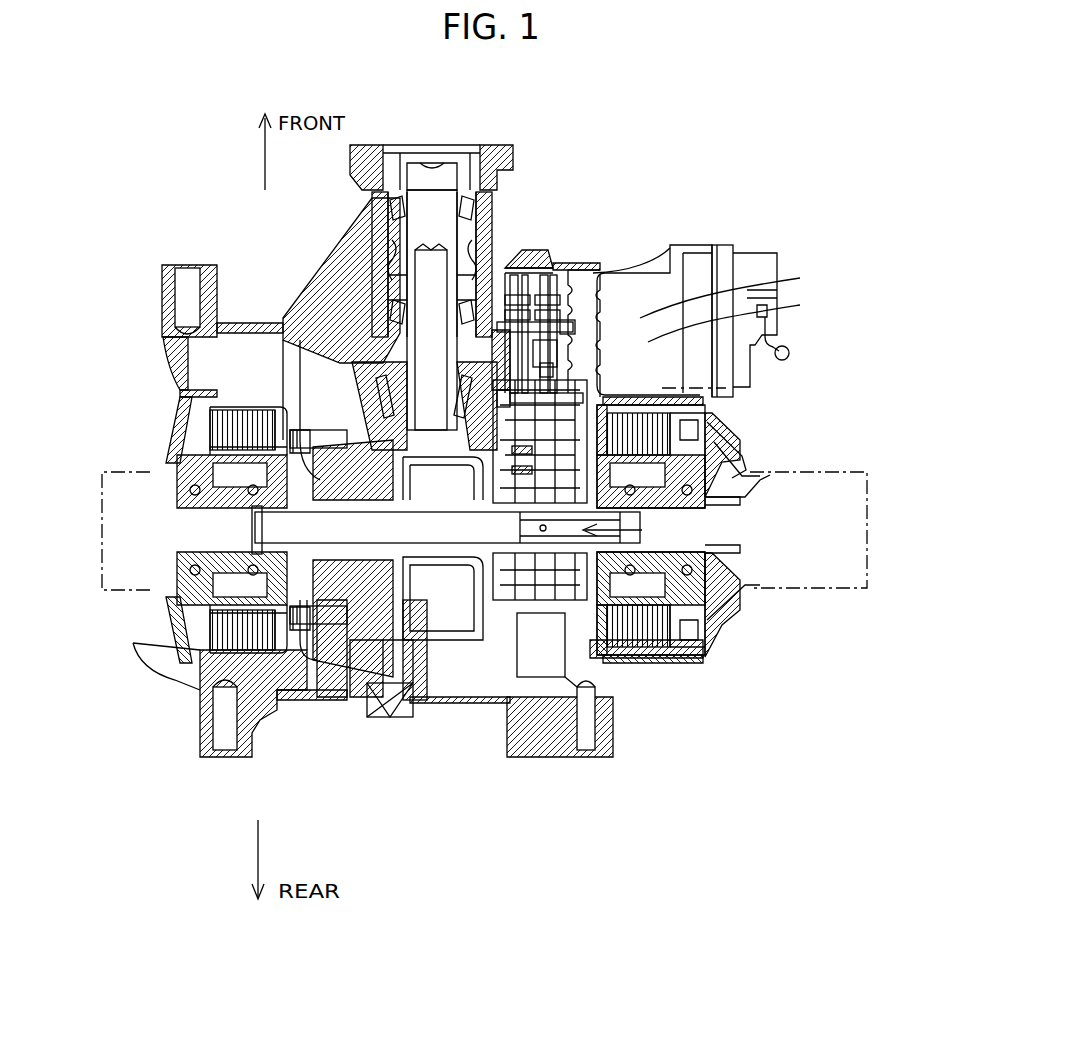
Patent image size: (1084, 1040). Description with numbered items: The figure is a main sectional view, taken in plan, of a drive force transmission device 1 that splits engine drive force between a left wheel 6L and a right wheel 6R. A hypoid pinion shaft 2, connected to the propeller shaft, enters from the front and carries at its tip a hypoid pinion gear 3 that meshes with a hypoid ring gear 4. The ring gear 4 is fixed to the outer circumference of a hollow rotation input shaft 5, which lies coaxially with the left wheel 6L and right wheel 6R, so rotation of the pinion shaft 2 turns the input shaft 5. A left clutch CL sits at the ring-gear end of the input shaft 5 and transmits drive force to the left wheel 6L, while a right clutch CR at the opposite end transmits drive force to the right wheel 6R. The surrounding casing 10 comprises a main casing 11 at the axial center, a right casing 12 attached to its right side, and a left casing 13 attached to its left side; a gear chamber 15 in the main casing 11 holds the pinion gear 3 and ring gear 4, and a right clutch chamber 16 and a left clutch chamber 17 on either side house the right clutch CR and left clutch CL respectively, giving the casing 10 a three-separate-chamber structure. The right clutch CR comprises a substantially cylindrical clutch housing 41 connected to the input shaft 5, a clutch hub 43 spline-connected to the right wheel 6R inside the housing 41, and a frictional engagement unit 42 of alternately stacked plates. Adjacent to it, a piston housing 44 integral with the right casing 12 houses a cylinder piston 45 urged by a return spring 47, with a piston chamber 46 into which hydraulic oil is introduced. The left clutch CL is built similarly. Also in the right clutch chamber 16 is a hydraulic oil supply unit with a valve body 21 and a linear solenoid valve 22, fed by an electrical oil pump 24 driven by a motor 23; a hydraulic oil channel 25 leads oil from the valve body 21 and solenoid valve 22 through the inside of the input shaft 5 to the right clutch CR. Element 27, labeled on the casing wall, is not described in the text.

The drive force transmission device 1 is at (590, 182).
The hypoid pinion shaft 2 is at (447, 230).
The hypoid pinion gear 3 is at (385, 375).
The hypoid ring gear 4 is at (352, 395).
The rotation input shaft 5 is at (467, 600).
The casing 10 is at (640, 408).
The main casing 11 is at (343, 700).
The right casing 12 is at (722, 616).
The left casing 13 is at (170, 640).
The gear chamber 15 is at (356, 696).
The right clutch chamber 16 is at (660, 652).
The left clutch chamber 17 is at (300, 665).
The valve body 21 is at (614, 390).
The linear solenoid valve 22 is at (553, 658).
The motor 23 is at (724, 246).
The oil pump 24 is at (556, 268).
The hydraulic oil channel 25 is at (642, 530).
The support wall 27 is at (487, 680).
The clutch housing 41 is at (800, 278).
The frictional engagement unit 42 is at (800, 305).
The clutch hub 43 is at (652, 522).
The piston housing 44 is at (708, 413).
The cylinder piston 45 is at (716, 440).
The piston chamber 46 is at (714, 425).
The return spring 47 is at (735, 478).
The left clutch CL is at (238, 402).
The right clutch CR is at (660, 386).
The left wheel 6L is at (118, 470).
The right wheel 6R is at (822, 472).